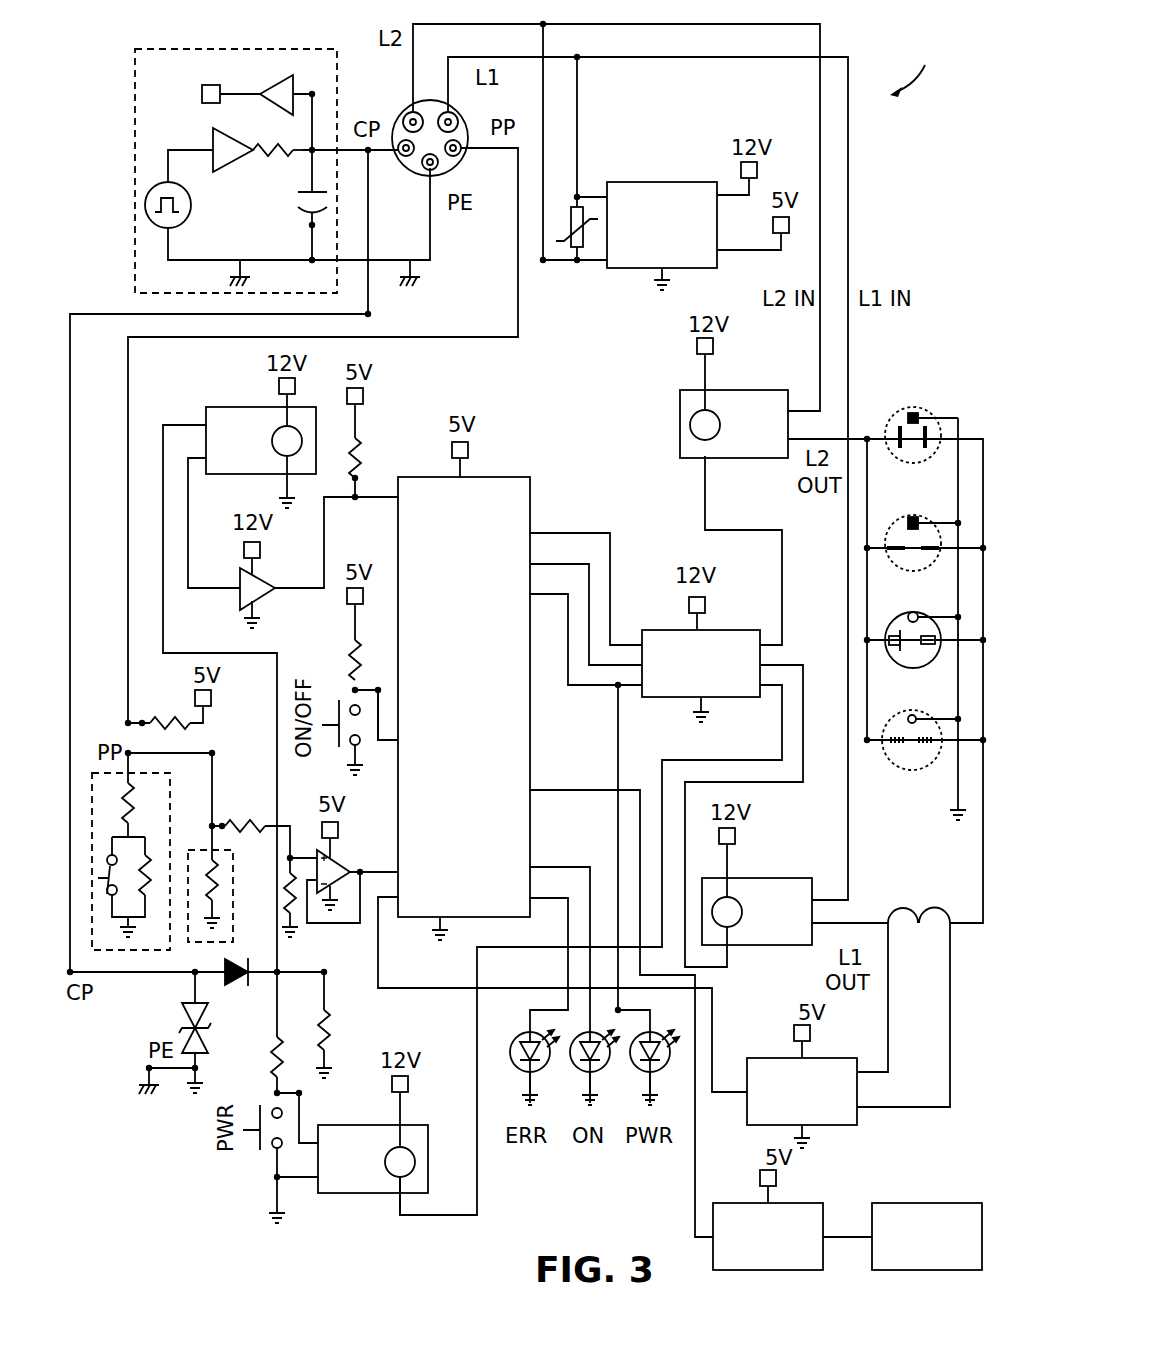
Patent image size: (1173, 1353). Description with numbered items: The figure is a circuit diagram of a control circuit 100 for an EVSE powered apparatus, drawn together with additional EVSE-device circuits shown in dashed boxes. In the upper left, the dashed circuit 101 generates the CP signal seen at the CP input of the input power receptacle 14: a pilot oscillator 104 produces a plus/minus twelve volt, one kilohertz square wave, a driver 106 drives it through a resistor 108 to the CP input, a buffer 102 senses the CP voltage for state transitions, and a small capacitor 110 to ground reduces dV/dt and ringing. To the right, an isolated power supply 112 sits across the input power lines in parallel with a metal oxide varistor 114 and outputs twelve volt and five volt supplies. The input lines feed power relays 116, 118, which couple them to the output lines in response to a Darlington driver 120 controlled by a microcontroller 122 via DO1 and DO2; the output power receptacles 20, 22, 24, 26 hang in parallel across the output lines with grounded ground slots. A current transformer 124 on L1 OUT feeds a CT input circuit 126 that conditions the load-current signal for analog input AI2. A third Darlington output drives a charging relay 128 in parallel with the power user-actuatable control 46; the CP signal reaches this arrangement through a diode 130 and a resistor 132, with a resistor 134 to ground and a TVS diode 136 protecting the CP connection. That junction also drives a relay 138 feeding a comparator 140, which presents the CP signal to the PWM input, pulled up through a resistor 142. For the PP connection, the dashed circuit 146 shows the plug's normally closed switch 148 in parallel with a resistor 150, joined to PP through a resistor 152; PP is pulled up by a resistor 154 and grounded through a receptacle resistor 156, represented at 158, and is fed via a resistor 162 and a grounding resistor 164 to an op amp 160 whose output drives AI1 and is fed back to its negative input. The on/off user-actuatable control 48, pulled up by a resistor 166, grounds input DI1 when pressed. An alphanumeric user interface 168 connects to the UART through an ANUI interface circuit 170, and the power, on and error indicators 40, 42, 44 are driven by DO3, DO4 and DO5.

The control circuit 100 is at (919, 67).
The circuit 101 is at (135, 118).
The buffer 102 is at (262, 94).
The pilot oscillator 104 is at (164, 183).
The driver 106 is at (213, 142).
The resistor 108 is at (262, 149).
The capacitor 110 is at (298, 211).
The input power receptacle 14 is at (396, 116).
The isolated power supply 112 is at (624, 182).
The metal oxide varistor 114 is at (580, 249).
The power relay 118 is at (678, 400).
The output power receptacle 20 is at (893, 411).
The output power receptacle 22 is at (897, 535).
The output power receptacle 24 is at (897, 630).
The output power receptacle 26 is at (900, 725).
The Darlington driver 120 is at (748, 630).
The microcontroller 122 is at (428, 477).
The power relay 116 is at (778, 878).
The current transformer 124 is at (900, 911).
The CT input circuit 126 is at (768, 1058).
The ANUI interface circuit 170 is at (745, 1203).
The alphanumeric user interface 168 is at (900, 1203).
The relay 138 is at (222, 407).
The comparator 140 is at (243, 601).
The resistor 142 is at (363, 446).
The resistor 166 is at (362, 678).
The on/off user-actuatable control 48 is at (338, 700).
The resistor 154 is at (166, 719).
The circuit 146 is at (170, 811).
The resistor 152 is at (137, 812).
The normally closed switch 148 is at (113, 920).
The resistor 150 is at (150, 893).
The resistor 156 is at (235, 892).
The receptacle resistor representation 158 is at (235, 940).
The resistor 162 is at (250, 820).
The resistor 164 is at (298, 872).
The op amp 160 is at (346, 876).
The diode 130 is at (250, 985).
The TVS diode 136 is at (184, 1027).
The resistor 132 is at (282, 1040).
The resistor 134 is at (330, 1024).
The power user-actuatable control 46 is at (259, 1107).
The charging relay 128 is at (365, 1125).
The error indicator 44 is at (516, 1046).
The on indicator 42 is at (576, 1066).
The power indicator 40 is at (638, 1066).